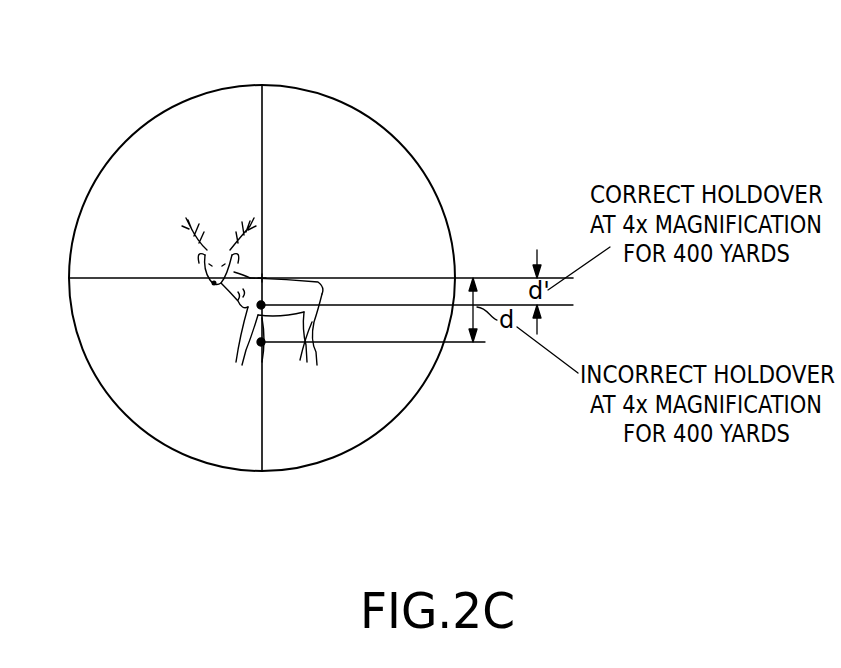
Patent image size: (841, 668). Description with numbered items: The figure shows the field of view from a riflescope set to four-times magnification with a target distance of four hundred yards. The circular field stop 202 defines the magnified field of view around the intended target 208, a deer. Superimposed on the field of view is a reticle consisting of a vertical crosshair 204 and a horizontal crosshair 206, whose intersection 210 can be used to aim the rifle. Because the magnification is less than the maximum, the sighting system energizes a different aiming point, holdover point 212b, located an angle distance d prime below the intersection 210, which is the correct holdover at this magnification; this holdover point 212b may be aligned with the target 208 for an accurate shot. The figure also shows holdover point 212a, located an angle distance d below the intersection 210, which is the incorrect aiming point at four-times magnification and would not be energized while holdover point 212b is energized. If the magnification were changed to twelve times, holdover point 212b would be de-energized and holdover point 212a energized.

The field stop 202 is at (340, 125).
The vertical crosshair 204 is at (262, 110).
The horizontal crosshair 206 is at (102, 278).
The target 208 is at (215, 287).
The intersection 210 is at (263, 277).
The holdover point 212a is at (263, 345).
The holdover point 212b is at (252, 308).